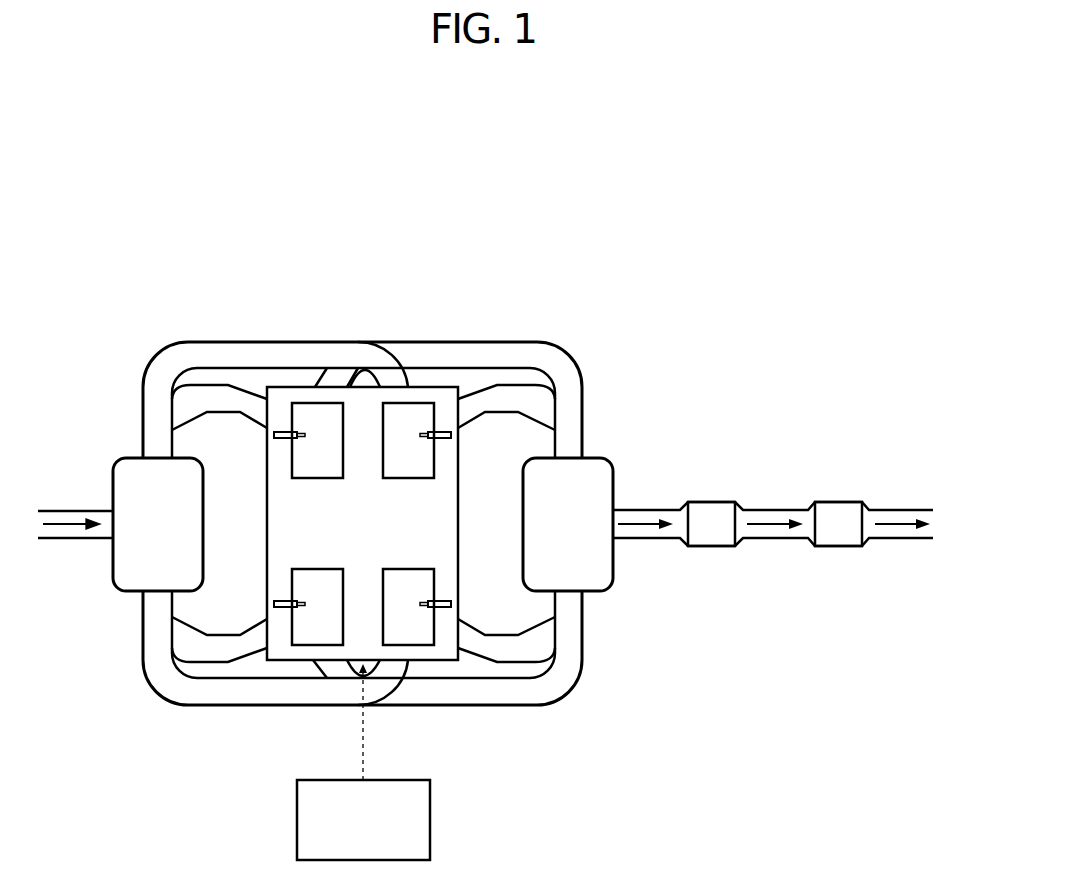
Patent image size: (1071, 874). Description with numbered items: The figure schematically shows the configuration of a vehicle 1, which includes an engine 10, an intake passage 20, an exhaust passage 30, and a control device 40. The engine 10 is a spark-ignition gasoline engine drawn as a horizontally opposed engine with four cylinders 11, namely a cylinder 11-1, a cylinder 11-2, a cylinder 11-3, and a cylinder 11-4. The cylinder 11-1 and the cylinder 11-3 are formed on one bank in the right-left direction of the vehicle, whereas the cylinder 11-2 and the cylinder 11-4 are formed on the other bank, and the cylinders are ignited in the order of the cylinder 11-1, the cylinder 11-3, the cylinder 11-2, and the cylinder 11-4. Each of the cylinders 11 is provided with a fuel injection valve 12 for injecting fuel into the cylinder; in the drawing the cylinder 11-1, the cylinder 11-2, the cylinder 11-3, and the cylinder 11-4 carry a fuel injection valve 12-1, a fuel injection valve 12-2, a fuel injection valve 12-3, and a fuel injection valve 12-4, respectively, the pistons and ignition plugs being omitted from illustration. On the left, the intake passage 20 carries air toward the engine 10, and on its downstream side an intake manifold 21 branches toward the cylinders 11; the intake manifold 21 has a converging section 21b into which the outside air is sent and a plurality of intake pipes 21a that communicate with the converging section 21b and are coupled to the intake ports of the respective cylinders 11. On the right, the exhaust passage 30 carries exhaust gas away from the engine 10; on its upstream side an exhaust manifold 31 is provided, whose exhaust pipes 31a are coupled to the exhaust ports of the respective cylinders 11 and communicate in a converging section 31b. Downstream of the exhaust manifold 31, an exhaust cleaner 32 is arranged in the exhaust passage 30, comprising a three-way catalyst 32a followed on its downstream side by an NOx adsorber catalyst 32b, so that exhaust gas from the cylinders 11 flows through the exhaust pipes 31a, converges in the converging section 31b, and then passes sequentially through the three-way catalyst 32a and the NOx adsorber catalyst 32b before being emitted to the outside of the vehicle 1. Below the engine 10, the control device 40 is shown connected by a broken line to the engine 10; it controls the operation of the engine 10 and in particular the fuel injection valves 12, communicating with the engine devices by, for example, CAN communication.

The vehicle 1 is at (786, 146).
The engine 10 is at (365, 247).
The cylinders 11 is at (362, 524).
The cylinder 11-1 is at (292, 464).
The cylinder 11-2 is at (292, 573).
The cylinder 11-3 is at (434, 464).
The cylinder 11-4 is at (434, 573).
The fuel injection valve 12 is at (365, 526).
The fuel injection valve 12-1 is at (295, 432).
The fuel injection valve 12-2 is at (295, 608).
The fuel injection valve 12-3 is at (432, 432).
The fuel injection valve 12-4 is at (432, 608).
The intake passage 20 is at (115, 242).
The intake manifold 21 is at (145, 327).
The intake pipes 21a is at (218, 342).
The converging section 21b is at (128, 457).
The exhaust passage 30 is at (635, 242).
The exhaust manifold 31 is at (583, 327).
The exhaust pipes 31a is at (503, 342).
The converging section 31b is at (600, 457).
The exhaust cleaner 32 is at (772, 425).
The three-way catalyst 32a is at (707, 502).
The NOx adsorber catalyst 32b is at (835, 502).
The control device 40 is at (430, 820).